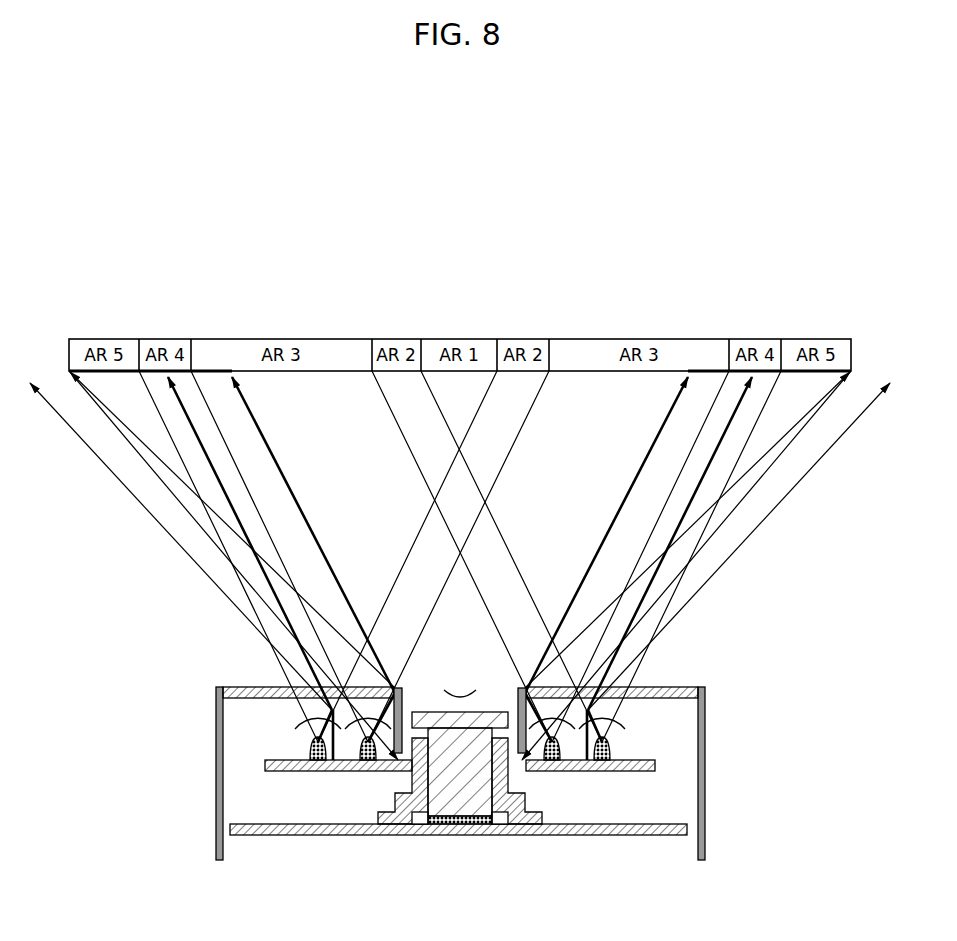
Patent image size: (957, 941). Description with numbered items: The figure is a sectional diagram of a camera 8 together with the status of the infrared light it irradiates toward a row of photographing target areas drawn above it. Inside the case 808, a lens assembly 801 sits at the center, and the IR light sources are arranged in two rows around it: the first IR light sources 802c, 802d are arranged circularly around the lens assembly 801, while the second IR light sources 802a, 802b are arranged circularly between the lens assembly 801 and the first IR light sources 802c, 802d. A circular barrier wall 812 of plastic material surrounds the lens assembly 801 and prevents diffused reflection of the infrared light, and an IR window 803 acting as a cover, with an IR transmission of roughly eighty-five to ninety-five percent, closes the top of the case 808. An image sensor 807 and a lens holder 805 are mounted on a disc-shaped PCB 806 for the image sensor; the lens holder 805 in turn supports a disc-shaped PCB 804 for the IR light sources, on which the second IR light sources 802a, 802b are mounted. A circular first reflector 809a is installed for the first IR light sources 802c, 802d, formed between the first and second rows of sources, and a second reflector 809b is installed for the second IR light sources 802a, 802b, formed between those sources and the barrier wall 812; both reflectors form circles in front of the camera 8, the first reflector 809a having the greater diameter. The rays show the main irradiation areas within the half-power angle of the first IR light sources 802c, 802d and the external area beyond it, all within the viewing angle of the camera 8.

The camera 8 is at (722, 641).
The lens assembly 801 is at (478, 775).
The second IR light source 802a is at (366, 761).
The second IR light source 802b is at (550, 761).
The first IR light source 802c is at (312, 761).
The first IR light source 802d is at (628, 735).
The IR window 803 is at (236, 687).
The PCB for an IR light source 804 is at (641, 771).
The lens holder 805 is at (520, 824).
The PCB for an image sensor 806 is at (671, 835).
The image sensor 807 is at (428, 824).
The case 808 is at (215, 782).
The first reflector 809a is at (334, 762).
The second reflector 809b is at (483, 826).
The barrier wall 812 is at (403, 697).